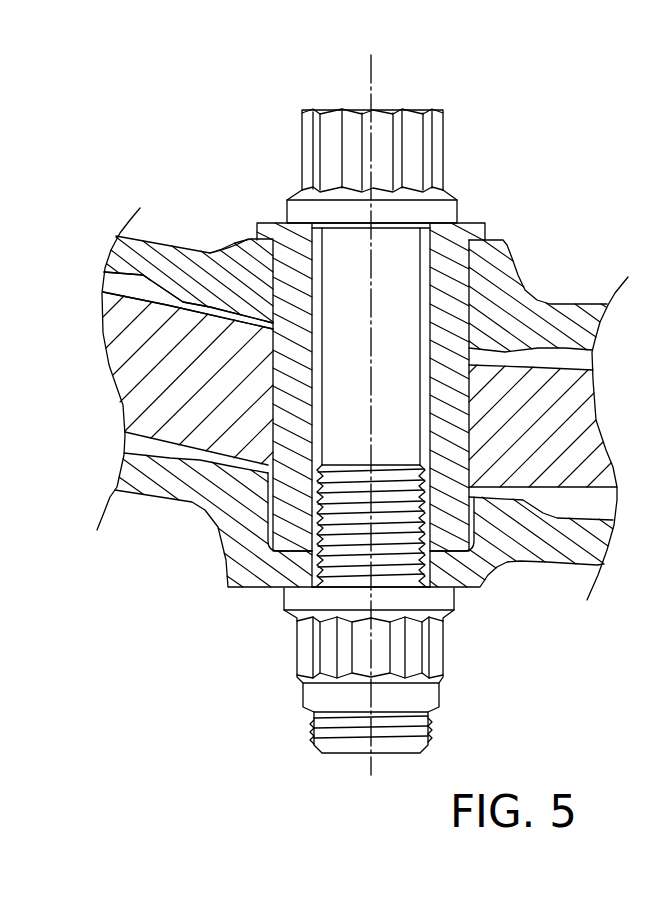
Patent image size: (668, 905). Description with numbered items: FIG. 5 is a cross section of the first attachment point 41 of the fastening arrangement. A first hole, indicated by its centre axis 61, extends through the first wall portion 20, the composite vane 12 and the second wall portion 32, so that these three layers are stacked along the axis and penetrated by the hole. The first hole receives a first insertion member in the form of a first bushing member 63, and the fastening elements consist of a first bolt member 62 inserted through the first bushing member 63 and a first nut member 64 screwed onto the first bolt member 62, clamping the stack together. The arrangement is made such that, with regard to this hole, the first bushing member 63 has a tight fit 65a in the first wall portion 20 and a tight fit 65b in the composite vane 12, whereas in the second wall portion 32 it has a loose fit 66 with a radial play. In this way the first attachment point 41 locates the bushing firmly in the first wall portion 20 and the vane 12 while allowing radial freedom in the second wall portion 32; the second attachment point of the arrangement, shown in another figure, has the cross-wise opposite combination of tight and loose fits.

The composite vane 12 is at (172, 400).
The first wall portion 20 is at (153, 240).
The second wall portion 32 is at (177, 480).
The first attachment point 41 is at (182, 639).
The centre axis of first hole 61 is at (371, 67).
The first bolt member 62 is at (395, 306).
The first bushing member 63 is at (452, 245).
The first nut member 64 is at (415, 642).
The tight fit 65a is at (238, 240).
The tight fit 65b is at (270, 368).
The loose fit 66 is at (268, 520).